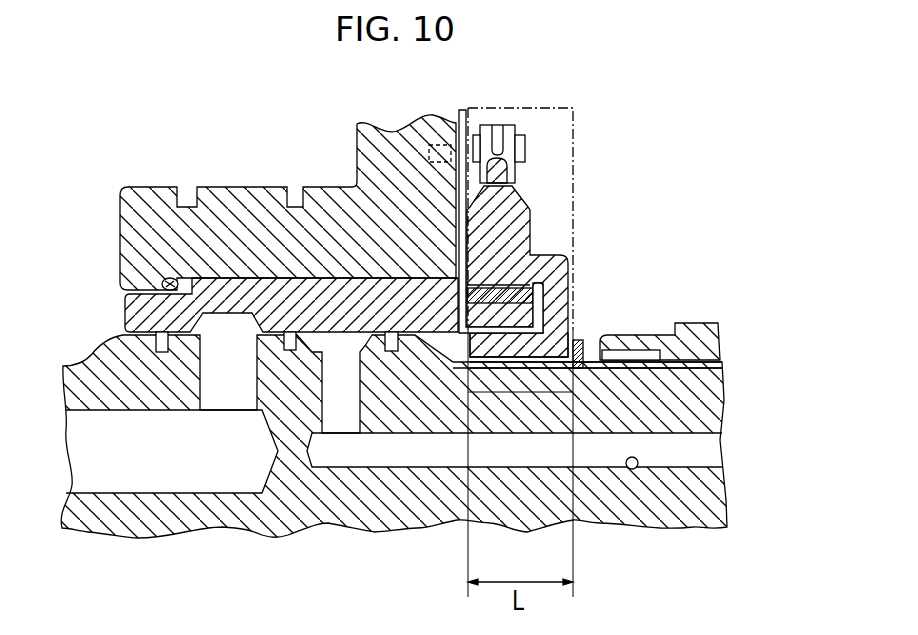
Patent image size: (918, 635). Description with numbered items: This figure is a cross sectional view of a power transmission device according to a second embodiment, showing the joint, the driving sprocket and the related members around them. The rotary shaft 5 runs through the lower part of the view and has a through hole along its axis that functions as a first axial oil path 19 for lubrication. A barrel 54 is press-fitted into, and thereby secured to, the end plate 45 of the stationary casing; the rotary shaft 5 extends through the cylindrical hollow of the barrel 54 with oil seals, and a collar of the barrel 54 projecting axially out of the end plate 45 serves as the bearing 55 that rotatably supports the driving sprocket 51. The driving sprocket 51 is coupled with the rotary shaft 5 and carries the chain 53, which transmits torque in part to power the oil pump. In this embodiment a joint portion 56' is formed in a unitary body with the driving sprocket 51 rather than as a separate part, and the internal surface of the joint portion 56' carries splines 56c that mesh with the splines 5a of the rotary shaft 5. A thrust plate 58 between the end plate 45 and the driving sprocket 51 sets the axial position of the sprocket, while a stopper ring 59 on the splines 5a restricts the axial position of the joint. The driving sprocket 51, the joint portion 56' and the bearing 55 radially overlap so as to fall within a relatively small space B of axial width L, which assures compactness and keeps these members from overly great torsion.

The rotary shaft 5 is at (693, 510).
The splines 5a is at (600, 338).
The first axial oil path 19 is at (633, 470).
The end plate 45 is at (223, 227).
The driving sprocket 51 is at (532, 206).
The chain 53 is at (469, 137).
The barrel 54 is at (257, 290).
The bearing 55 is at (537, 252).
The joint portion 56' is at (569, 306).
The splines 56c is at (533, 367).
The thrust plate 58 is at (455, 186).
The stopper ring 59 is at (584, 338).
The space B is at (567, 106).